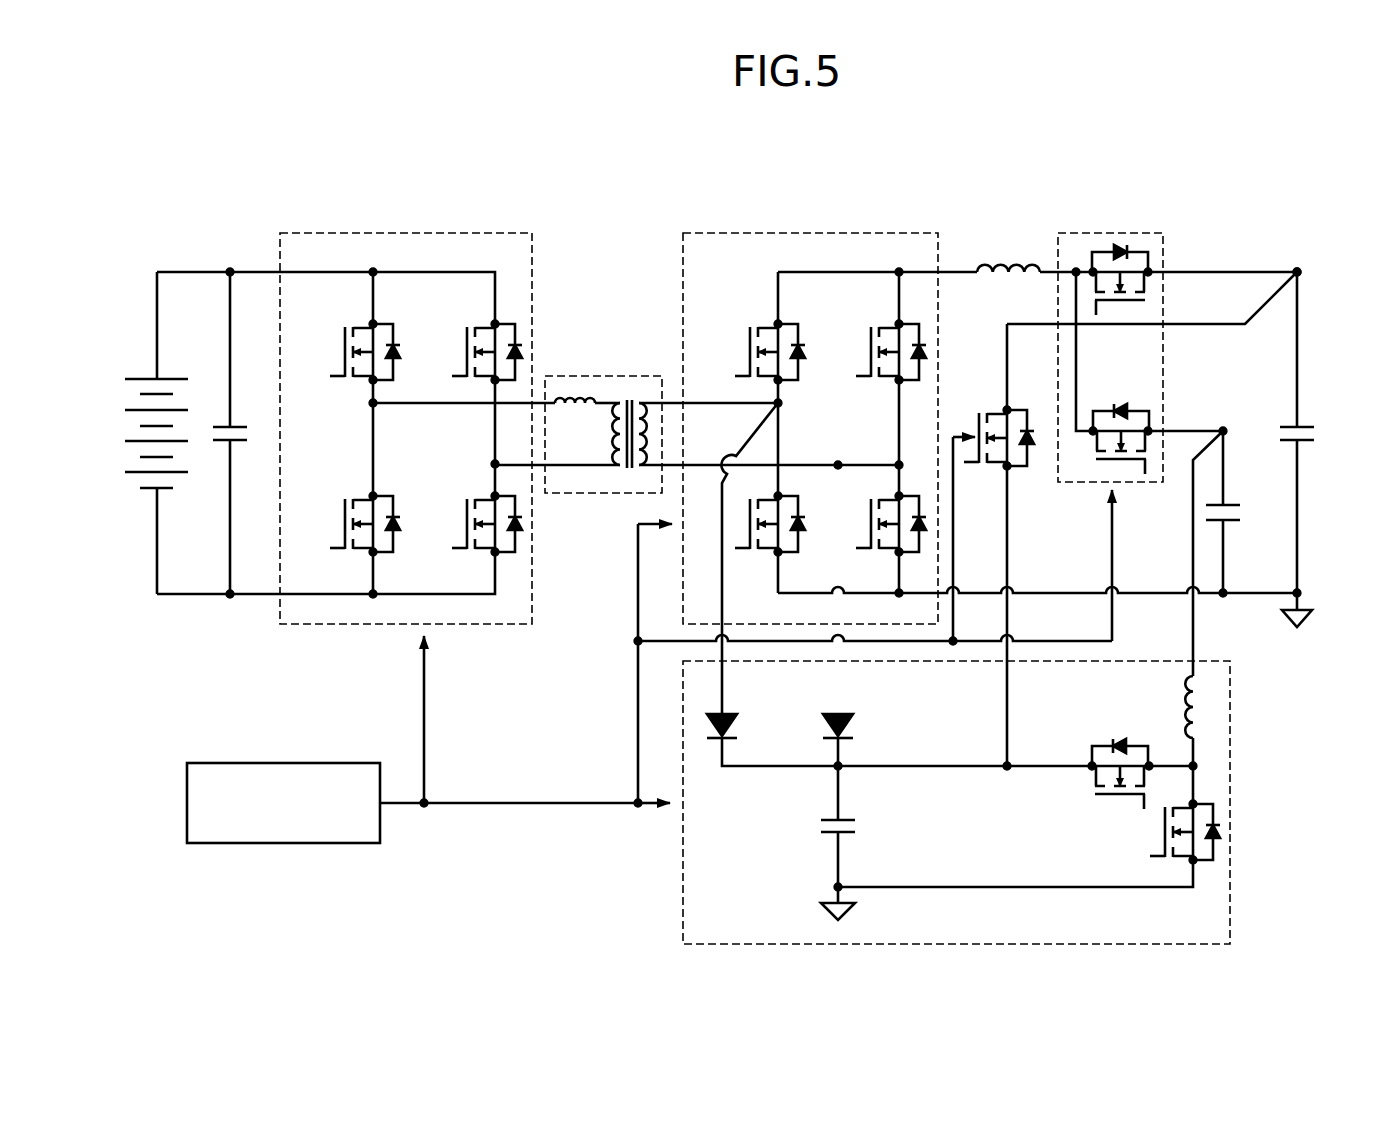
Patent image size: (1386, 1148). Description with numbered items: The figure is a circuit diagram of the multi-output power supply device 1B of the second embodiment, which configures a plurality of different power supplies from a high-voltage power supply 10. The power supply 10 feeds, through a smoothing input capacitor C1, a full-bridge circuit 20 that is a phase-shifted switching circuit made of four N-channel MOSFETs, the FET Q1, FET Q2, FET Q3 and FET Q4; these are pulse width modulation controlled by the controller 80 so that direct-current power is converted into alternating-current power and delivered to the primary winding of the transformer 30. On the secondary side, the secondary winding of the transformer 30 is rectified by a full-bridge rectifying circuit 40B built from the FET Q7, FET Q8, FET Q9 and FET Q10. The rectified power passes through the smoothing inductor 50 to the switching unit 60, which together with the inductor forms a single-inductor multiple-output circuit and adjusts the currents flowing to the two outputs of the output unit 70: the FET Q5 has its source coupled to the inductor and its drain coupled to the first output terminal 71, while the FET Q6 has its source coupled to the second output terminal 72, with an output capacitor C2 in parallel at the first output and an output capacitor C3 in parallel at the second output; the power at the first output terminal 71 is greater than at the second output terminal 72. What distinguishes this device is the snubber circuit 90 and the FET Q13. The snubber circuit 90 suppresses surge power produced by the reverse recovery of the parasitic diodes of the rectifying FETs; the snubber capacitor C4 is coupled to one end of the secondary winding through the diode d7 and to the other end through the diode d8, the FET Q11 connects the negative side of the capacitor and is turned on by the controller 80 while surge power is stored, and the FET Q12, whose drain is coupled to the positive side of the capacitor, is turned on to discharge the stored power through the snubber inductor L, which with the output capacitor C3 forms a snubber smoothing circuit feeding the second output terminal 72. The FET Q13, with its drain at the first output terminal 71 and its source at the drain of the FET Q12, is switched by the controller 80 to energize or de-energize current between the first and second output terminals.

The multi-output power supply device 1B is at (614, 152).
The power supply 10 is at (126, 360).
The input capacitor C1 is at (234, 425).
The full-bridge circuit 20 is at (422, 232).
The FET Q1 is at (348, 384).
The FET Q2 is at (348, 490).
The FET Q3 is at (480, 314).
The FET Q4 is at (480, 562).
The transformer 30 is at (601, 376).
The full-bridge circuit (rectifying circuit) 40B is at (810, 232).
The FET Q7 is at (748, 312).
The FET Q8 is at (755, 558).
The FET Q9 is at (886, 314).
The FET Q10 is at (857, 494).
The smoothing inductor 50 is at (1013, 262).
The switching unit 60 is at (1108, 232).
The FET Q5 is at (1082, 250).
The FET Q6 is at (1103, 405).
The FET Q13 is at (970, 402).
The output unit 70 is at (1292, 336).
The first output terminal 71 is at (1303, 272).
The second output terminal 72 is at (1223, 429).
The output capacitor C2 is at (1300, 425).
The output capacitor C3 is at (1230, 504).
The controller 80 is at (280, 762).
The snubber circuit 90 is at (1232, 757).
The diode d7 is at (742, 725).
The diode d8 is at (858, 725).
The snubber capacitor C4 is at (858, 826).
The snubber inductor L is at (1180, 698).
The FET Q11 is at (1146, 845).
The FET Q12 is at (1122, 806).